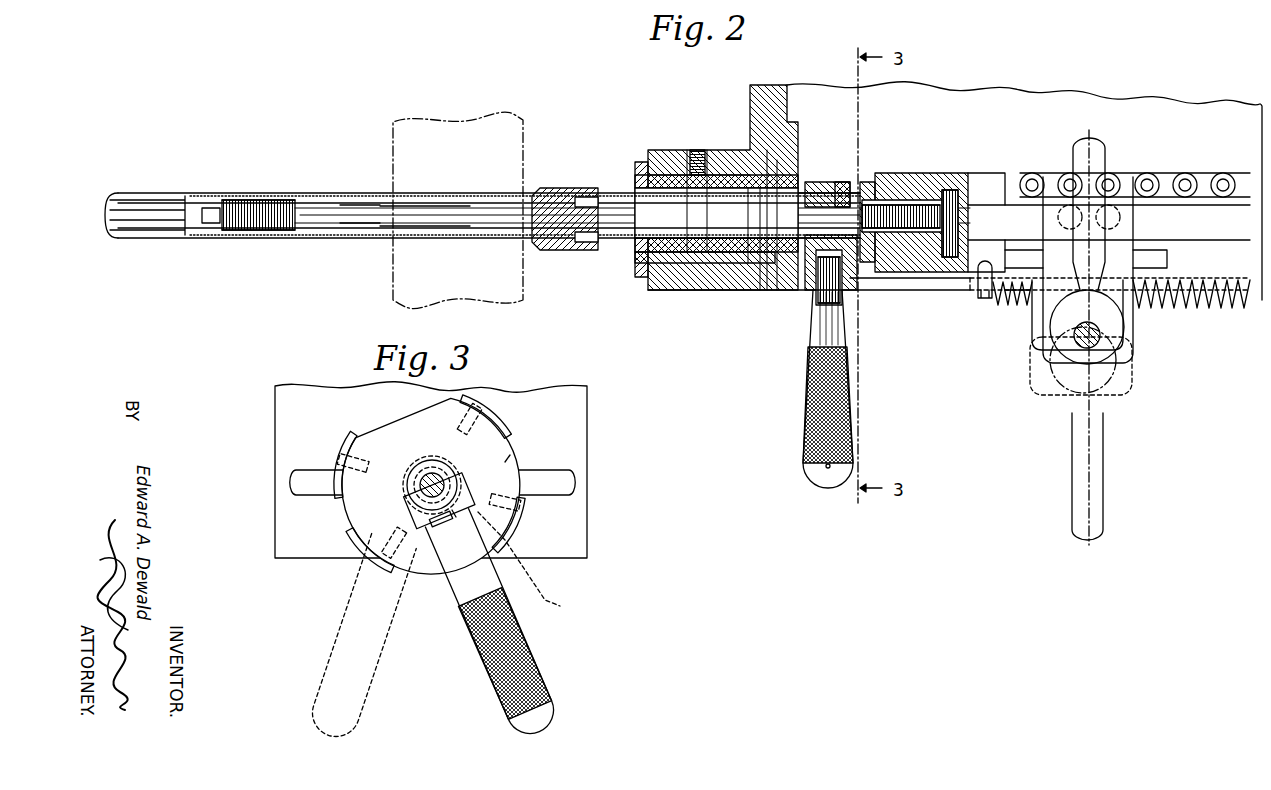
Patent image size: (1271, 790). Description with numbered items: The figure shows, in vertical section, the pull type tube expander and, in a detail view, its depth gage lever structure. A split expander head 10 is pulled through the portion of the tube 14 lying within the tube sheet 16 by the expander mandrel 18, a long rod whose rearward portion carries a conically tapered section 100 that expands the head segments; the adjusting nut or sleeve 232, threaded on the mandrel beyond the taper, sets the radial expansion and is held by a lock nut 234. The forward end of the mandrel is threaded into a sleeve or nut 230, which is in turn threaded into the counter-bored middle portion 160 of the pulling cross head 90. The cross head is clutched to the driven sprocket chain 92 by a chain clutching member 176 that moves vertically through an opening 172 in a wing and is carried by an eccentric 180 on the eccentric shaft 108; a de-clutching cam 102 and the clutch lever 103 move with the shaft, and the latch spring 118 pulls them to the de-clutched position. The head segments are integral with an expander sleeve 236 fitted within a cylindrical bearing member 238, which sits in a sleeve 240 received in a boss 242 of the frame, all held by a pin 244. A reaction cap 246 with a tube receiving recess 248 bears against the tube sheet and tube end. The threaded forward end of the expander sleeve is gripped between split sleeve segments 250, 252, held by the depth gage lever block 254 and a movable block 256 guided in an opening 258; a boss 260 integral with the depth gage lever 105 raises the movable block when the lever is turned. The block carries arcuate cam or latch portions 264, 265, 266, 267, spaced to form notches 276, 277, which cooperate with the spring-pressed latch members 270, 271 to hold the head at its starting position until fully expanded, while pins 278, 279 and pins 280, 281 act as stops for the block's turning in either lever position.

In FIG. 2, the split expander head 10 is at (392, 236).
In FIG. 2, the tube 14 is at (278, 240).
In FIG. 2, the tube sheet 16 is at (457, 112).
In FIG. 2, the expander mandrel 18 is at (355, 224).
In FIG. 2, the pulling cross head 90 is at (1003, 210).
In FIG. 2, the driven sprocket chain 92 is at (1202, 176).
In FIG. 2, the conically tapered section 100 is at (347, 203).
In FIG. 2, the de-clutching cam 102 is at (1052, 310).
In FIG. 2, the clutch lever 103 is at (1106, 477).
In FIG. 2, the depth gage lever 105 is at (812, 372).
In FIG. 3, the depth gage lever 105 is at (522, 640).
In FIG. 2, the eccentric shaft 108 is at (1078, 332).
In FIG. 2, the latch spring 118 is at (1208, 304).
In FIG. 2, the middle portion (cylindrical block) 160 is at (957, 176).
In FIG. 2, the opening 172 is at (1120, 222).
In FIG. 2, the chain clutching member 176 is at (1127, 176).
In FIG. 2, the eccentric 180 is at (1100, 315).
In FIG. 2, the sleeve or nut 230 is at (910, 186).
In FIG. 2, the adjusting nut or sleeve 232 is at (290, 200).
In FIG. 2, the lock nut 234 is at (238, 196).
In FIG. 2, the expander sleeve 236 is at (583, 243).
In FIG. 2, the cylindrical bearing member 238 is at (630, 188).
In FIG. 2, the sleeve 240 is at (665, 258).
In FIG. 2, the boss 242 is at (652, 152).
In FIG. 2, the pin 244 is at (698, 150).
In FIG. 2, the reaction cap 246 is at (564, 190).
In FIG. 2, the tube receiving recess 248 is at (536, 190).
In FIG. 2, the split sleeve segment 250 is at (820, 182).
In FIG. 3, the split sleeve segment 250 is at (425, 472).
In FIG. 2, the split sleeve segment 252 is at (856, 262).
In FIG. 3, the split sleeve segment 252 is at (462, 516).
In FIG. 2, the depth gage lever block 254 is at (843, 183).
In FIG. 3, the depth gage lever block 254 is at (381, 437).
In FIG. 2, the movable block 256 is at (800, 262).
In FIG. 3, the movable block 256 is at (417, 488).
In FIG. 3, the opening 258 is at (440, 526).
In FIG. 2, the boss 260 is at (815, 292).
In FIG. 3, the boss 260 is at (453, 624).
In FIG. 3, the arcuate cam or latch portion 264 is at (350, 447).
In FIG. 3, the arcuate cam or latch portion 265 is at (498, 425).
In FIG. 3, the arcuate cam or latch portion 266 is at (512, 520).
In FIG. 3, the arcuate cam or latch portion 267 is at (370, 545).
In FIG. 3, the latch member 270 is at (312, 482).
In FIG. 3, the latch member 271 is at (560, 487).
In FIG. 3, the notch 276 is at (350, 512).
In FIG. 3, the notch 277 is at (510, 455).
In FIG. 3, the pin 278 is at (347, 465).
In FIG. 3, the pin 279 is at (522, 500).
In FIG. 3, the pin 280 is at (386, 550).
In FIG. 3, the pin 281 is at (474, 410).